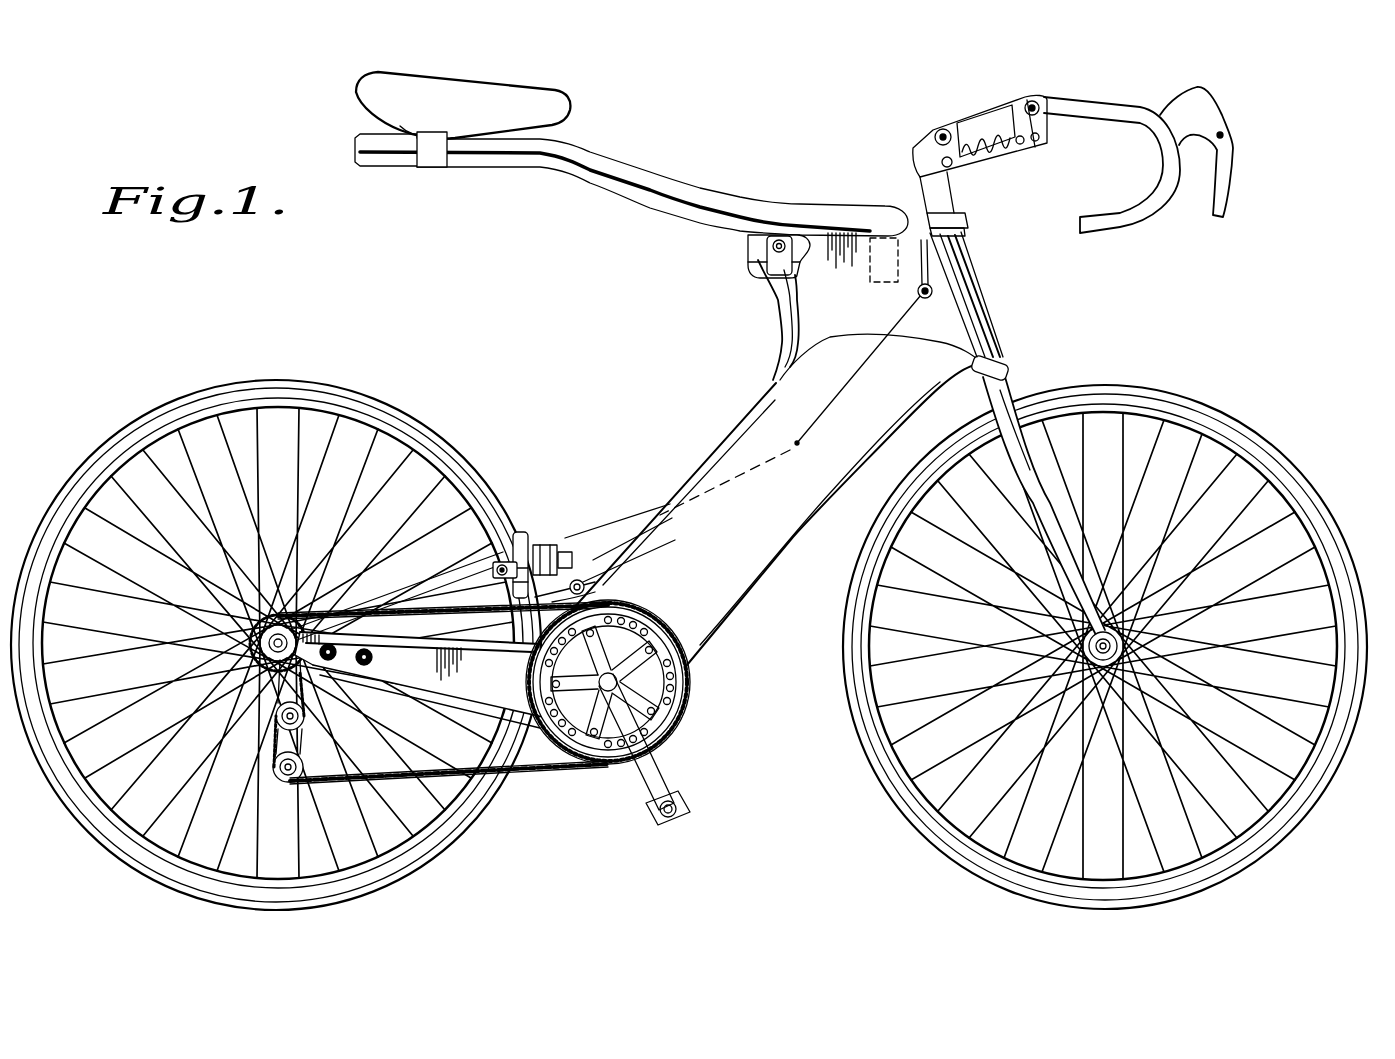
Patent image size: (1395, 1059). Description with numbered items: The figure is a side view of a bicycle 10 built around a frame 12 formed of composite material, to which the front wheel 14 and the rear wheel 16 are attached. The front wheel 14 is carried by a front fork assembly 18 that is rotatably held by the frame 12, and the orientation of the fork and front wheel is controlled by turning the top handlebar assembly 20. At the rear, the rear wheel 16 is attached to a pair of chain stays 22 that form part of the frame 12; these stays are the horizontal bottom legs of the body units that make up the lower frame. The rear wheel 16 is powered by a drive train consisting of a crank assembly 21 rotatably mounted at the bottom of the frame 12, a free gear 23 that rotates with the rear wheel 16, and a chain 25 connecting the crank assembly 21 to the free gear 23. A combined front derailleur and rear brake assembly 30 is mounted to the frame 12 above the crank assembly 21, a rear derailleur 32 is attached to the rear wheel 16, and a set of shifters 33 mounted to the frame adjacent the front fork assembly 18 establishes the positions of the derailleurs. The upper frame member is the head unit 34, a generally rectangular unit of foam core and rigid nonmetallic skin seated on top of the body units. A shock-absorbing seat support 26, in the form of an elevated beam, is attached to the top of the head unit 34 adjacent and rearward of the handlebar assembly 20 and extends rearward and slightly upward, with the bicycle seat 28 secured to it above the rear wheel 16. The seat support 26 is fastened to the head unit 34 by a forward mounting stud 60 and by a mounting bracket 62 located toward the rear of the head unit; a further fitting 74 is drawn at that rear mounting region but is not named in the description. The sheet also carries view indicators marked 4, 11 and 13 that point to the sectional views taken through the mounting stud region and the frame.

The bicycle 10 is at (578, 358).
The seat mast section 11 is at (748, 380).
The frame 12 is at (751, 608).
The frame strut 13 is at (600, 522).
The front wheel 14 is at (1214, 402).
The rear wheel 16 is at (208, 384).
The front fork assembly 18 is at (1008, 378).
The top handlebar assembly 20 is at (969, 117).
The crank assembly 21 is at (681, 728).
The chain stays 22 is at (420, 672).
The free gear 23 is at (303, 576).
The chain 25 is at (542, 774).
The shock-absorbing seat support 26 is at (670, 183).
The bicycle seat 28 is at (458, 89).
The combined front derailleur and rear brake assembly 30 is at (546, 540).
The rear derailleur 32 is at (293, 788).
The shifters 33 is at (932, 272).
The head unit 34 is at (965, 313).
The forward mounting stud 60 is at (835, 215).
The mounting bracket 62 is at (767, 270).
The clamp fastener 74 is at (750, 253).
The section line 4 is at (900, 173).